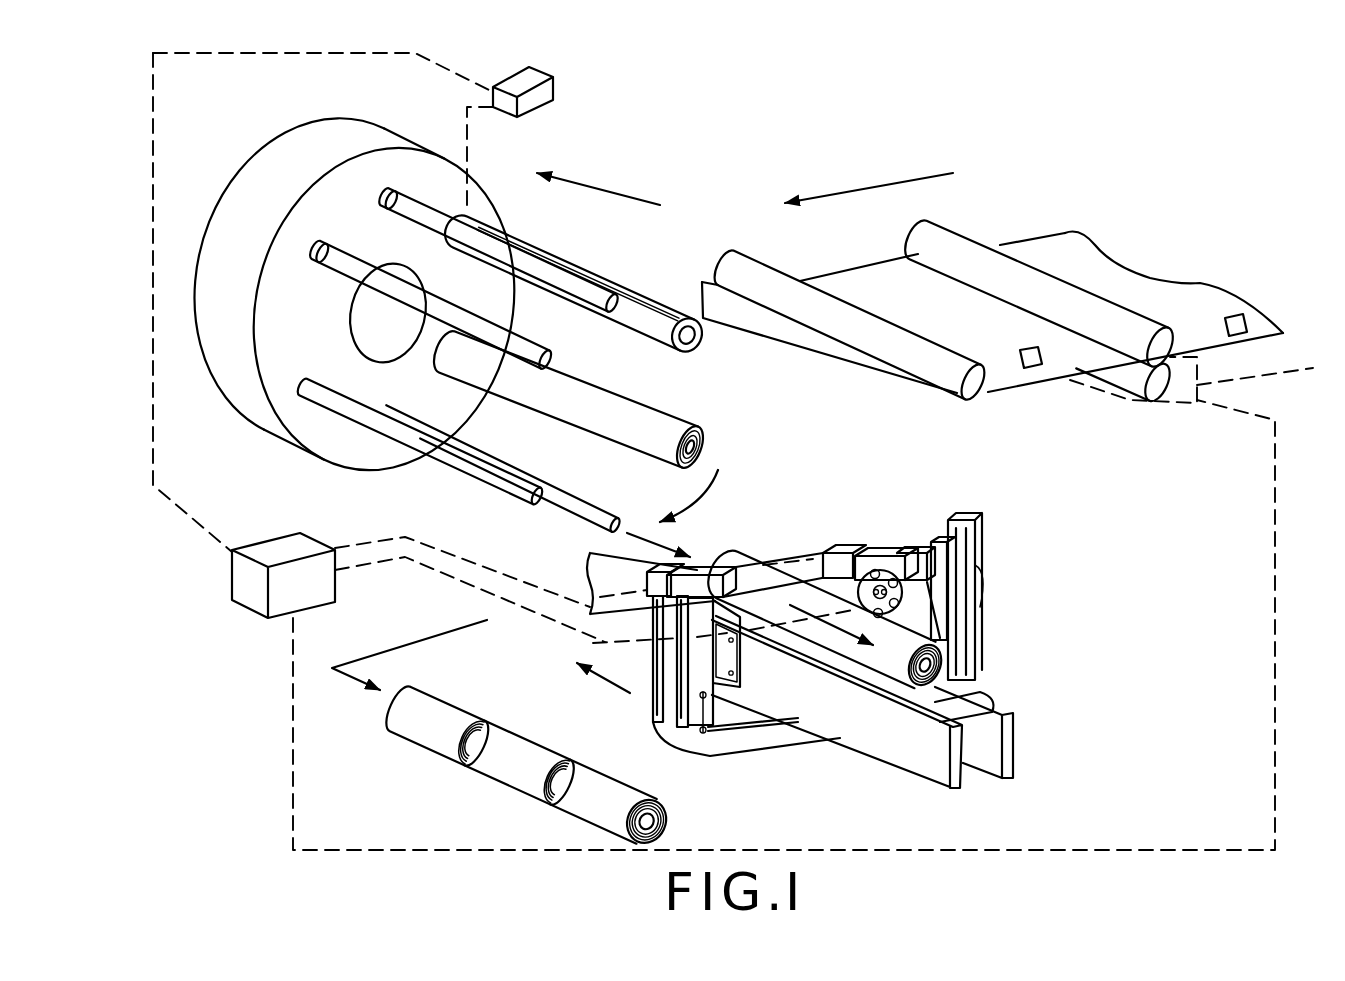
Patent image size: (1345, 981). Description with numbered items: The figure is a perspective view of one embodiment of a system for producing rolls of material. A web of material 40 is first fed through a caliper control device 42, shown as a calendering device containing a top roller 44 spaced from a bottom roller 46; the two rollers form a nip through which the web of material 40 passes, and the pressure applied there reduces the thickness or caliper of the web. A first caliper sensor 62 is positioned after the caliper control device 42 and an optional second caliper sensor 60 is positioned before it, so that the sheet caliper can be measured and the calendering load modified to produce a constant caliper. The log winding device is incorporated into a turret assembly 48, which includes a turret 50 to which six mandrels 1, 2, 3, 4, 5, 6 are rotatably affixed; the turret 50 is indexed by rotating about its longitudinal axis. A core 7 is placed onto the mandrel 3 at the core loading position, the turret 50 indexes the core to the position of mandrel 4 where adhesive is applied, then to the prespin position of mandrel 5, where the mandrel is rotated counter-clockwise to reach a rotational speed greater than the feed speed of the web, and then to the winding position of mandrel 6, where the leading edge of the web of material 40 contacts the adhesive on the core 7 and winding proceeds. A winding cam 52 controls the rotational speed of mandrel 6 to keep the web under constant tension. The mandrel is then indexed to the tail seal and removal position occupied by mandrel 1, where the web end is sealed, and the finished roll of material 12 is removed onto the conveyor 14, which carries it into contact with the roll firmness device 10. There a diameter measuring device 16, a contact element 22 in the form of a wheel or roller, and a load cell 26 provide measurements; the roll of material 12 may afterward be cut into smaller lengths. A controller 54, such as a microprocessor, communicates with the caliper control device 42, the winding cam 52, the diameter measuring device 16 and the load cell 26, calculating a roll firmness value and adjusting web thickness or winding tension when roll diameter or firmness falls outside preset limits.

The mandrel 1 is at (703, 447).
The mandrel 2 is at (555, 497).
The mandrel 3 is at (471, 470).
The mandrel 4 is at (306, 248).
The mandrel 5 is at (372, 192).
The mandrel 6 is at (695, 337).
The core 7 is at (425, 224).
The roll firmness device 10 is at (819, 629).
The roll of material 12 is at (727, 558).
The conveyor 14 is at (985, 698).
The diameter measuring device 16 is at (833, 542).
The contact element 22 is at (880, 562).
The load cell 26 is at (912, 560).
The web of material 40 is at (1063, 243).
The caliper control device 42 is at (935, 205).
The top roller 44 is at (1103, 318).
The bottom roller 46 is at (1160, 398).
The turret assembly 48 is at (332, 103).
The turret 50 is at (248, 185).
The winding cam 52 is at (553, 88).
The controller 54 is at (232, 585).
The second caliper sensor 60 is at (1238, 318).
The first caliper sensor 62 is at (1020, 352).